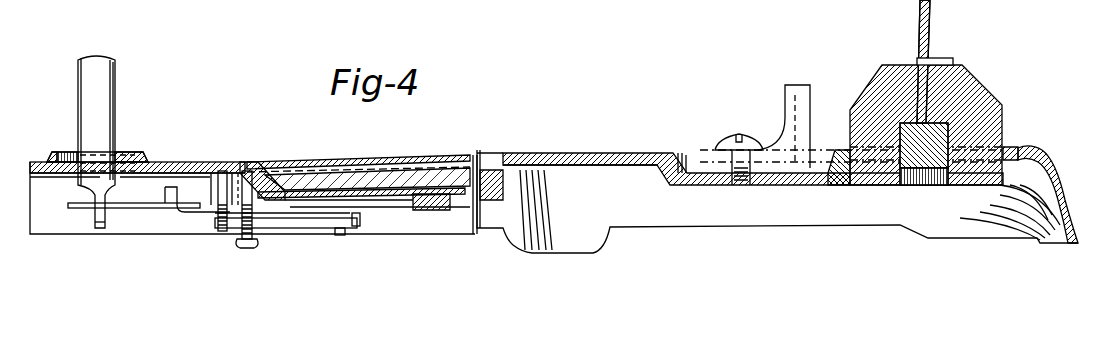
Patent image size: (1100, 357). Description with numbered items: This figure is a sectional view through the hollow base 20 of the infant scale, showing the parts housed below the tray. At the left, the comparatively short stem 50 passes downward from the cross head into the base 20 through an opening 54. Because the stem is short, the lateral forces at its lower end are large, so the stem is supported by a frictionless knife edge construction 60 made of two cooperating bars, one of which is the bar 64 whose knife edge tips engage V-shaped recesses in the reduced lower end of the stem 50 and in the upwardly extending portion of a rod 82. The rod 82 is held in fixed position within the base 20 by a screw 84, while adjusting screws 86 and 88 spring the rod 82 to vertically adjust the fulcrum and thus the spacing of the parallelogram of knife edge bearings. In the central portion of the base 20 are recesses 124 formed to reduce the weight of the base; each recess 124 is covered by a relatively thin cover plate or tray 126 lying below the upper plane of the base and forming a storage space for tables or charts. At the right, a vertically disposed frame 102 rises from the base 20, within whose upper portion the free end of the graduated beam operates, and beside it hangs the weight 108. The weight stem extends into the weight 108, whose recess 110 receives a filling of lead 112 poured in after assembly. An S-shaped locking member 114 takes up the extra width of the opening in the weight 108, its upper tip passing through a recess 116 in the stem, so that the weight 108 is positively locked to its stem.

The base 20 is at (570, 153).
The stem 50 is at (88, 94).
The opening 54 is at (125, 152).
The bar 64 is at (114, 207).
The knife edge construction 60 is at (281, 236).
The rod 82 is at (358, 226).
The screw 84 is at (340, 236).
The adjusting screw 86 is at (222, 231).
The adjusting screw 88 is at (247, 249).
The cover plate or tray 126 is at (320, 194).
The recess 124 is at (388, 194).
The frame 102 is at (785, 90).
The weight 108 is at (965, 78).
The filling material 112 is at (1003, 133).
The recess 110 is at (915, 187).
The recess 116 is at (918, 52).
The S-shaped locking member 114 is at (935, 58).